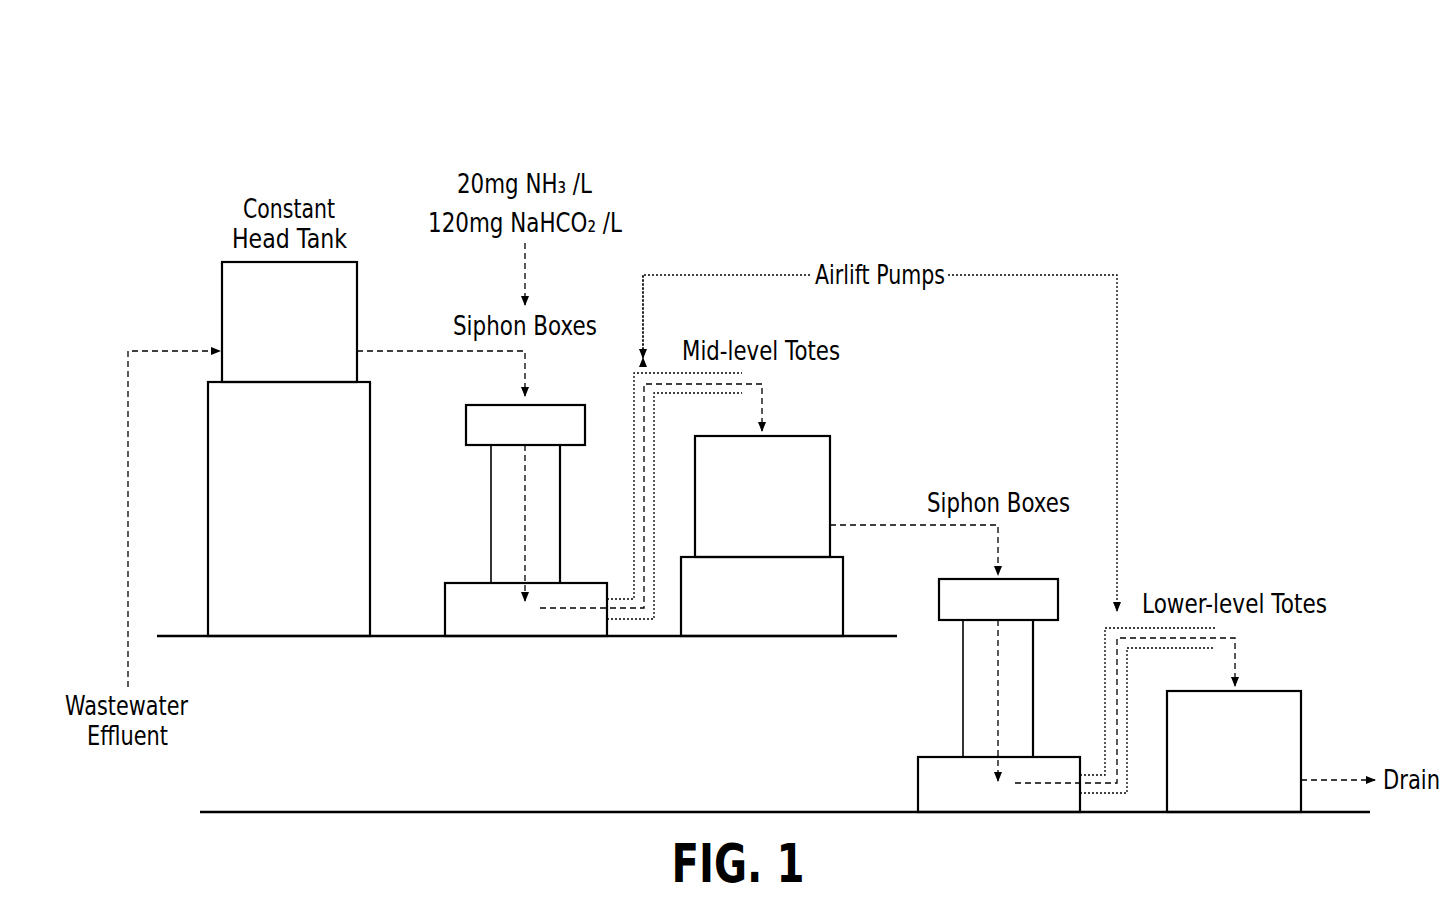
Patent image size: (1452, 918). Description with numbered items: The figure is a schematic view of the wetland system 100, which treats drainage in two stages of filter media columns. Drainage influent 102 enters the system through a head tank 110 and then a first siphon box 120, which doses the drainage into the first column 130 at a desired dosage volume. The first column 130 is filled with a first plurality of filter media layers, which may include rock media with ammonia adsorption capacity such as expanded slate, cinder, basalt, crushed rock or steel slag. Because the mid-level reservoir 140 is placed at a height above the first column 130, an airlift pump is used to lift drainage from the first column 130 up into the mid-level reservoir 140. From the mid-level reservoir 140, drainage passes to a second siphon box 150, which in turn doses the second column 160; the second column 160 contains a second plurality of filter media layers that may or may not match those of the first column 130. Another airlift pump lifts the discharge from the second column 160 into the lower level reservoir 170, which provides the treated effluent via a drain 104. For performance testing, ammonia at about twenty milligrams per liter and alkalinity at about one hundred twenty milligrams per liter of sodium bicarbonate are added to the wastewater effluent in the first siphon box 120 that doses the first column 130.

The wetland system 100 is at (983, 197).
The drainage influent 102 is at (176, 348).
The drain 104 is at (1340, 780).
The head tank 110 is at (359, 285).
The first siphon box 120 is at (466, 426).
The first column 130 is at (491, 514).
The mid-level reservoir 140 is at (830, 463).
The second siphon box 150 is at (939, 603).
The second column 160 is at (963, 690).
The lower level reservoir 170 is at (1278, 690).